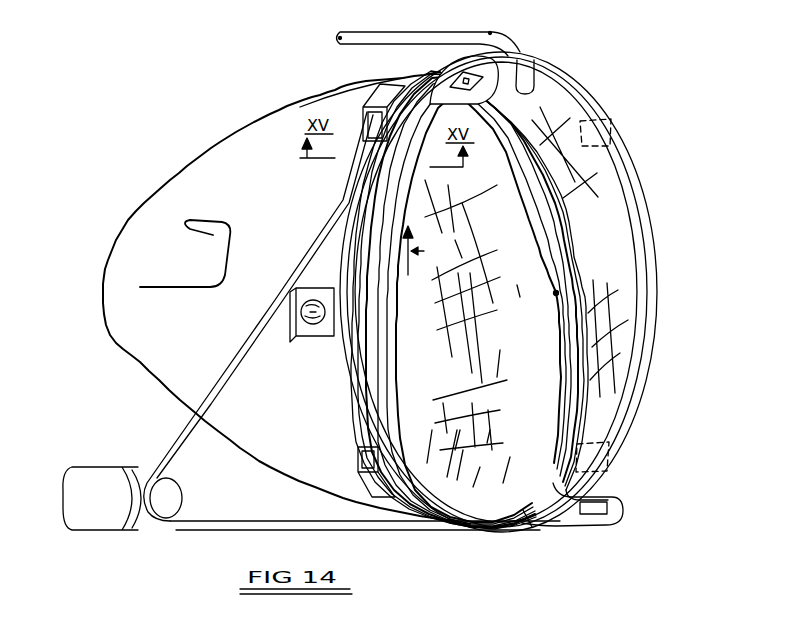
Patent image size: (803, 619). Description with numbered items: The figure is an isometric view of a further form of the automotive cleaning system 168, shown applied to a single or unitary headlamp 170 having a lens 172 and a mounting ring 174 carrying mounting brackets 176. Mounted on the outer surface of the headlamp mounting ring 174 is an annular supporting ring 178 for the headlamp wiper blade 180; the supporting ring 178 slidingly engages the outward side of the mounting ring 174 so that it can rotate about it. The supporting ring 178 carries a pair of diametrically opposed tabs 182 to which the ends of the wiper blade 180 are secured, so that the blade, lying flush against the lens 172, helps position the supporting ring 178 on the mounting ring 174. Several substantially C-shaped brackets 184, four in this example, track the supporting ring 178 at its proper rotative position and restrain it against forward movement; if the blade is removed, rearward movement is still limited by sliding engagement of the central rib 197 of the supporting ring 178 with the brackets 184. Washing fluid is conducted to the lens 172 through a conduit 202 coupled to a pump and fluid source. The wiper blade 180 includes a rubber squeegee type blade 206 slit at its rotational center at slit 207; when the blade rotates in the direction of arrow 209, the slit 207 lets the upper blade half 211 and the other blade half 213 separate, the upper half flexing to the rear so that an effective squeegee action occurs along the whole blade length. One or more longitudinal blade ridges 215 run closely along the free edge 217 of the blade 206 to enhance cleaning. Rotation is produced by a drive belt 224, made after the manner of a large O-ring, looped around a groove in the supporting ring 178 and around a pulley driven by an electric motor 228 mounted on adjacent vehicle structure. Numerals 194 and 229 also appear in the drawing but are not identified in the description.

The automotive cleaning system 168 is at (395, 288).
The headlamp 170 is at (303, 88).
The lens 172 is at (524, 507).
The mounting ring 174 is at (400, 385).
The mounting brackets 176 is at (303, 337).
The supporting ring 178 is at (524, 62).
The headlamp wiper blade 180 is at (568, 229).
The tabs 182 is at (540, 55).
The C-shaped brackets 184 is at (364, 101).
The guide 194 is at (366, 406).
The central rib 197 is at (582, 606).
The conduit 202 is at (468, 10).
The squeegee type blade 206 is at (572, 258).
The slit 207 is at (553, 294).
The arrow 209 is at (430, 250).
The upper blade half 211 is at (546, 256).
The blade half 213 is at (558, 410).
The longitudinal blade ridges 215 is at (533, 221).
The free edge 217 is at (561, 387).
The drive belt 224 is at (187, 420).
The electric motor 228 is at (100, 478).
The roller 229 is at (170, 497).